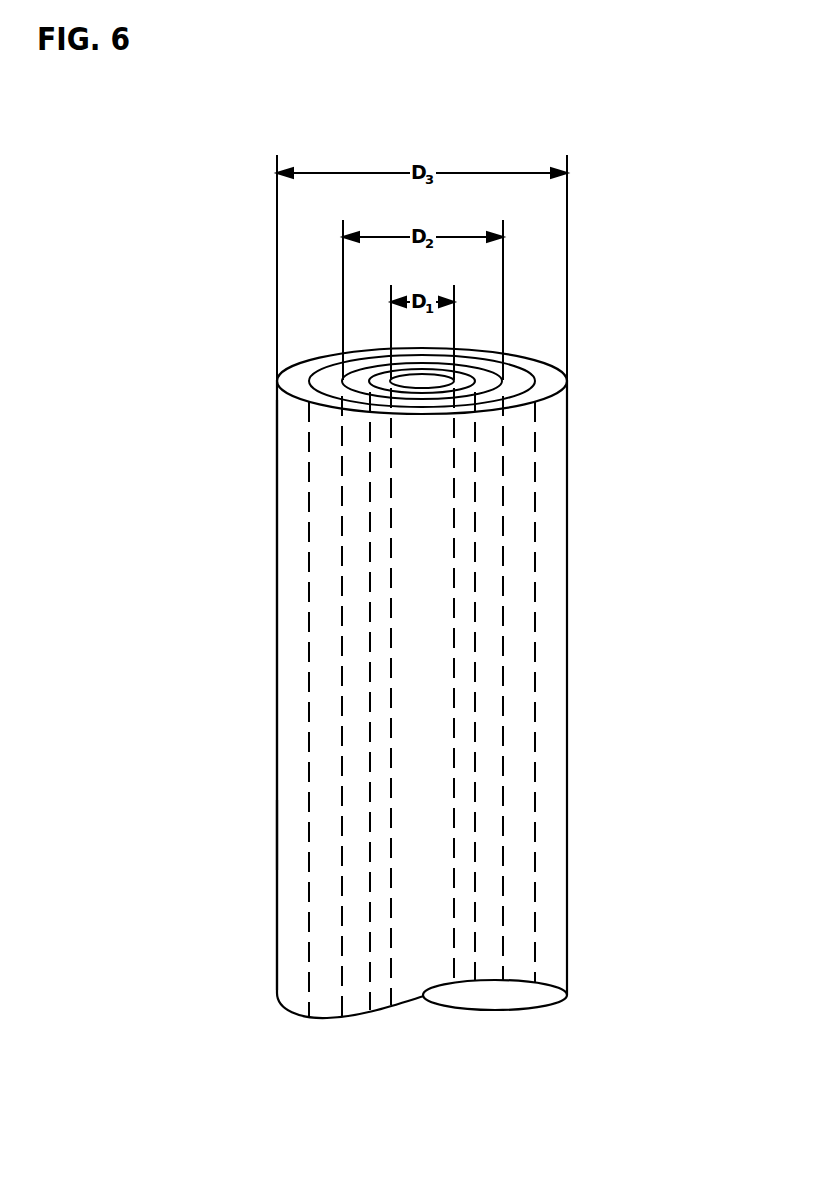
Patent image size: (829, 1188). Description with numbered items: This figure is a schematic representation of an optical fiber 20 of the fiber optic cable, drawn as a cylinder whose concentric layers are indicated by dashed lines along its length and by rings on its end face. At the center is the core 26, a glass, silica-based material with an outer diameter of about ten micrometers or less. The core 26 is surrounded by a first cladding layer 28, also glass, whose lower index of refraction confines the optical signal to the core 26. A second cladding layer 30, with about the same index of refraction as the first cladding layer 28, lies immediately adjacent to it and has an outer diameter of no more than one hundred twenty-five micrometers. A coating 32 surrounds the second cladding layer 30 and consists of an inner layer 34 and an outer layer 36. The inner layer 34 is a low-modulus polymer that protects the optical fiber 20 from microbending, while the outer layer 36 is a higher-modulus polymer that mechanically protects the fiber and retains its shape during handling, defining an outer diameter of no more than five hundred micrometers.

The optical fiber 20 is at (228, 493).
The core 26 is at (455, 492).
The first cladding layer 28 is at (475, 712).
The second cladding layer 30 is at (503, 603).
The coating 32 is at (265, 827).
The inner layer 34 is at (310, 777).
The outer layer 36 is at (277, 695).